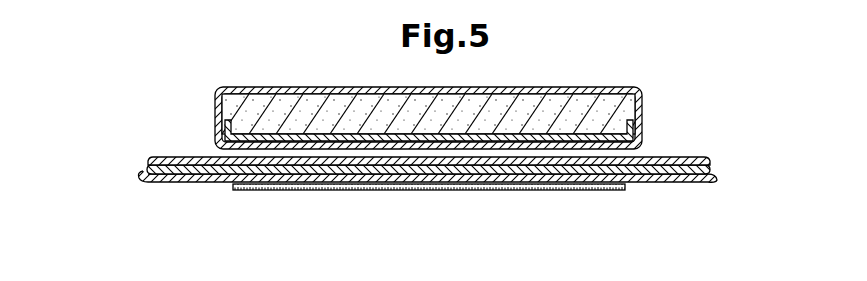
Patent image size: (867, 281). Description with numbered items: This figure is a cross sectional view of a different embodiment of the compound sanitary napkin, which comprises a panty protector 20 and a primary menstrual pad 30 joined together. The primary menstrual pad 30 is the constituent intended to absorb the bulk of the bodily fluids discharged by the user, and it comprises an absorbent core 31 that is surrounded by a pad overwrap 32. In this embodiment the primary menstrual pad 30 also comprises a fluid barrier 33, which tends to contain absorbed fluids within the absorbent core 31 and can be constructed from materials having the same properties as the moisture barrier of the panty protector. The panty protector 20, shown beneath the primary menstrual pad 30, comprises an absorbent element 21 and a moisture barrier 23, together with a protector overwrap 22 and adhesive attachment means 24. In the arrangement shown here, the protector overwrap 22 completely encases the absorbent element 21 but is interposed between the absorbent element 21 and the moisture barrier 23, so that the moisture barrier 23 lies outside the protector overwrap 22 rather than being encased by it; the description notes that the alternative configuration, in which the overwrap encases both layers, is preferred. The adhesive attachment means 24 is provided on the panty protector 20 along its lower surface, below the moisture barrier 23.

The panty protector 20 is at (408, 180).
The absorbent element 21 is at (643, 162).
The protector overwrap 22 is at (693, 157).
The moisture barrier 23 is at (716, 178).
The adhesive attachment means 24 is at (578, 189).
The primary menstrual pad 30 is at (406, 101).
The absorbent core 31 is at (597, 107).
The pad overwrap 32 is at (643, 103).
The fluid barrier 33 is at (632, 133).